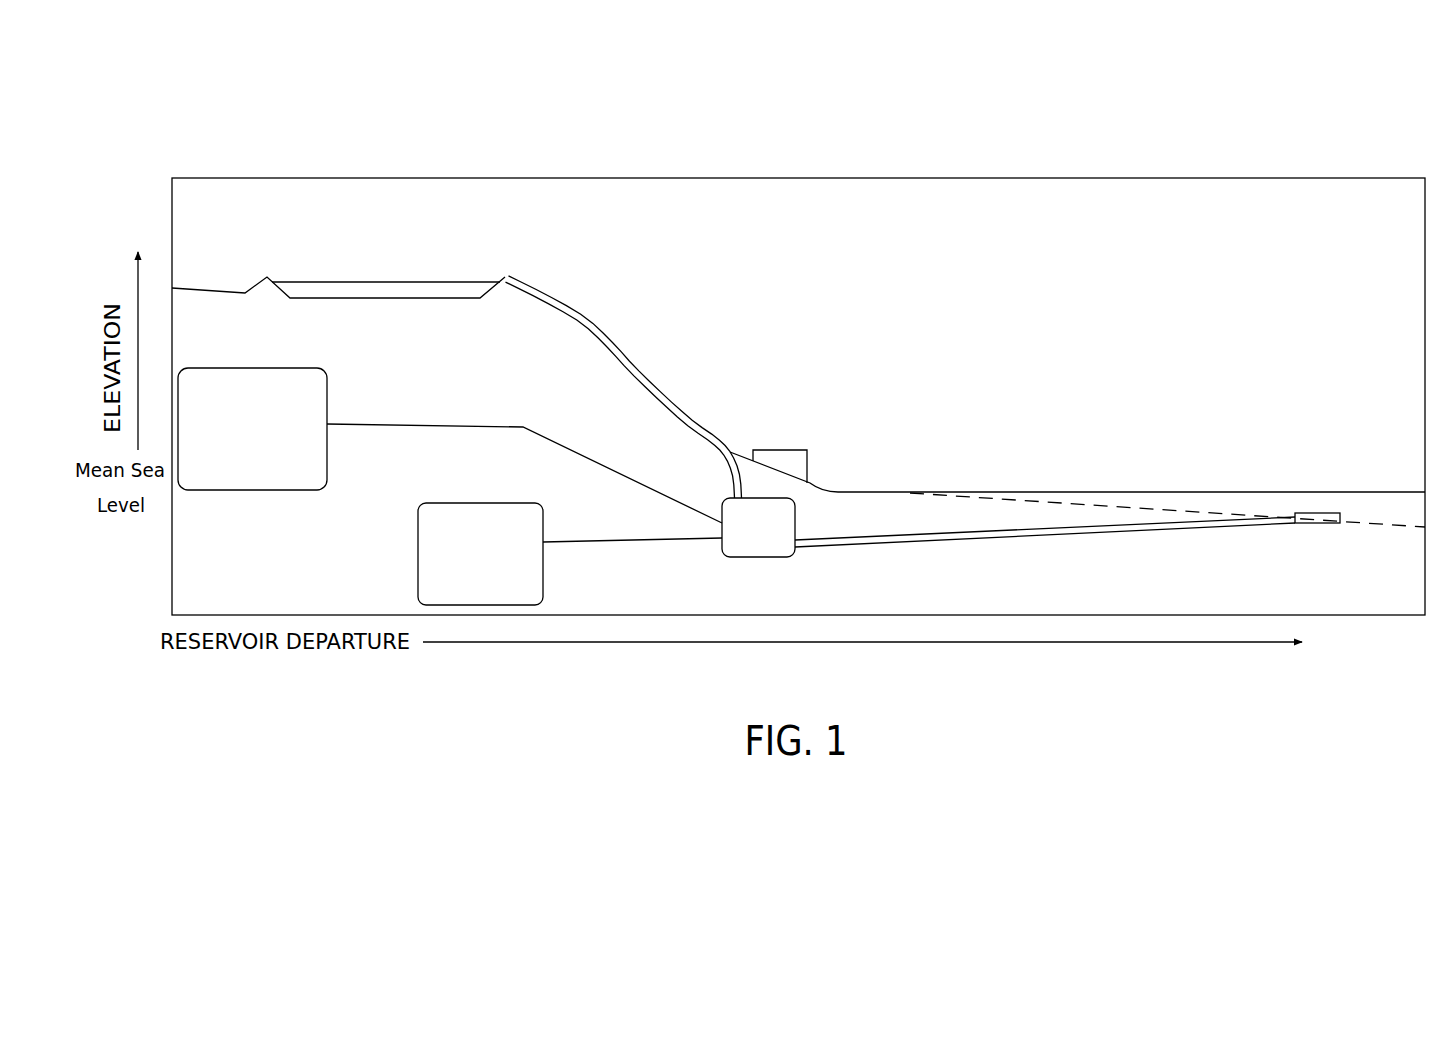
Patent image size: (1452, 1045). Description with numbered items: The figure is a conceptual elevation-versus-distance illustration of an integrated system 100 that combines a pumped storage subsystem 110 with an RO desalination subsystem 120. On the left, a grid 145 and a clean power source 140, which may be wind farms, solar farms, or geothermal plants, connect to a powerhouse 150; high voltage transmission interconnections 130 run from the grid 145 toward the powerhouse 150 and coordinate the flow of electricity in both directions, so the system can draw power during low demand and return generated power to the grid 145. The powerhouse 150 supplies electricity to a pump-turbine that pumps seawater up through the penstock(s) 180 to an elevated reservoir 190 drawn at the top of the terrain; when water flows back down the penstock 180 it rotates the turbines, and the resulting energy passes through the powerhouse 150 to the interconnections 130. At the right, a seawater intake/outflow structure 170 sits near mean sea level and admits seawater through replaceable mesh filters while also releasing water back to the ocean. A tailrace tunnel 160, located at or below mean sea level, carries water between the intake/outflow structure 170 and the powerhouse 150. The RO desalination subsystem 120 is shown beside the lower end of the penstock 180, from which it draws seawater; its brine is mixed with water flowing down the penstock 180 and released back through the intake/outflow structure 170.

The integrated system 100 is at (274, 146).
The pumped storage subsystem 110 is at (655, 281).
The RO desalination subsystem 120 is at (785, 445).
The high voltage transmission interconnections 130 is at (424, 425).
The clean power source 140 is at (497, 590).
The grid 145 is at (237, 471).
The powerhouse 150 is at (775, 540).
The tailrace tunnel 160 is at (992, 545).
The intake/outflow structure 170 is at (1315, 508).
The penstock(s) 180 is at (639, 370).
The reservoir 190 is at (367, 278).